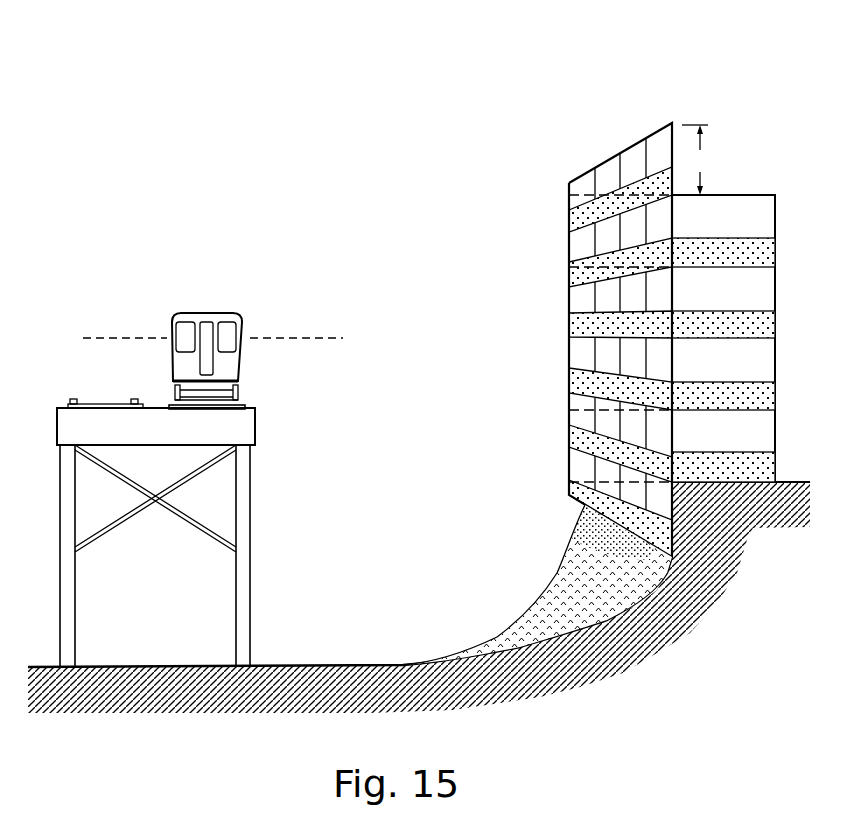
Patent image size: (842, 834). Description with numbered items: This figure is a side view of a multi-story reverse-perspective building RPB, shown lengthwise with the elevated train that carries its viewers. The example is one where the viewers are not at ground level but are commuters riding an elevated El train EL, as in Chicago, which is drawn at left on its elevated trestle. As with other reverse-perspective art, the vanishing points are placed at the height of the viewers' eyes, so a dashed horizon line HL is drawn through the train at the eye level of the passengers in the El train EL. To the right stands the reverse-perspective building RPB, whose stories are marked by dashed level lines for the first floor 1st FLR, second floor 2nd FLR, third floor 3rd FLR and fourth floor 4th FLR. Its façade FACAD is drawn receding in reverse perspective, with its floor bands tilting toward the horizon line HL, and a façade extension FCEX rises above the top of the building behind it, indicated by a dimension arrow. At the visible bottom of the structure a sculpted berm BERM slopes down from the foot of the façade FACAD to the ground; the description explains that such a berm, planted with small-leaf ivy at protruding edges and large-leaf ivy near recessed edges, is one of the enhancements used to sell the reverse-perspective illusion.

The reverse-perspective building RPB is at (598, 90).
The façade FACAD is at (633, 158).
The façade extension FCEX is at (705, 160).
The fourth floor 4th FLR is at (576, 217).
The third floor 3rd FLR is at (576, 289).
The second floor 2nd FLR is at (574, 386).
The first floor 1st FLR is at (578, 459).
The berm BERM is at (580, 587).
The El train EL is at (177, 312).
The horizon line HL is at (305, 335).